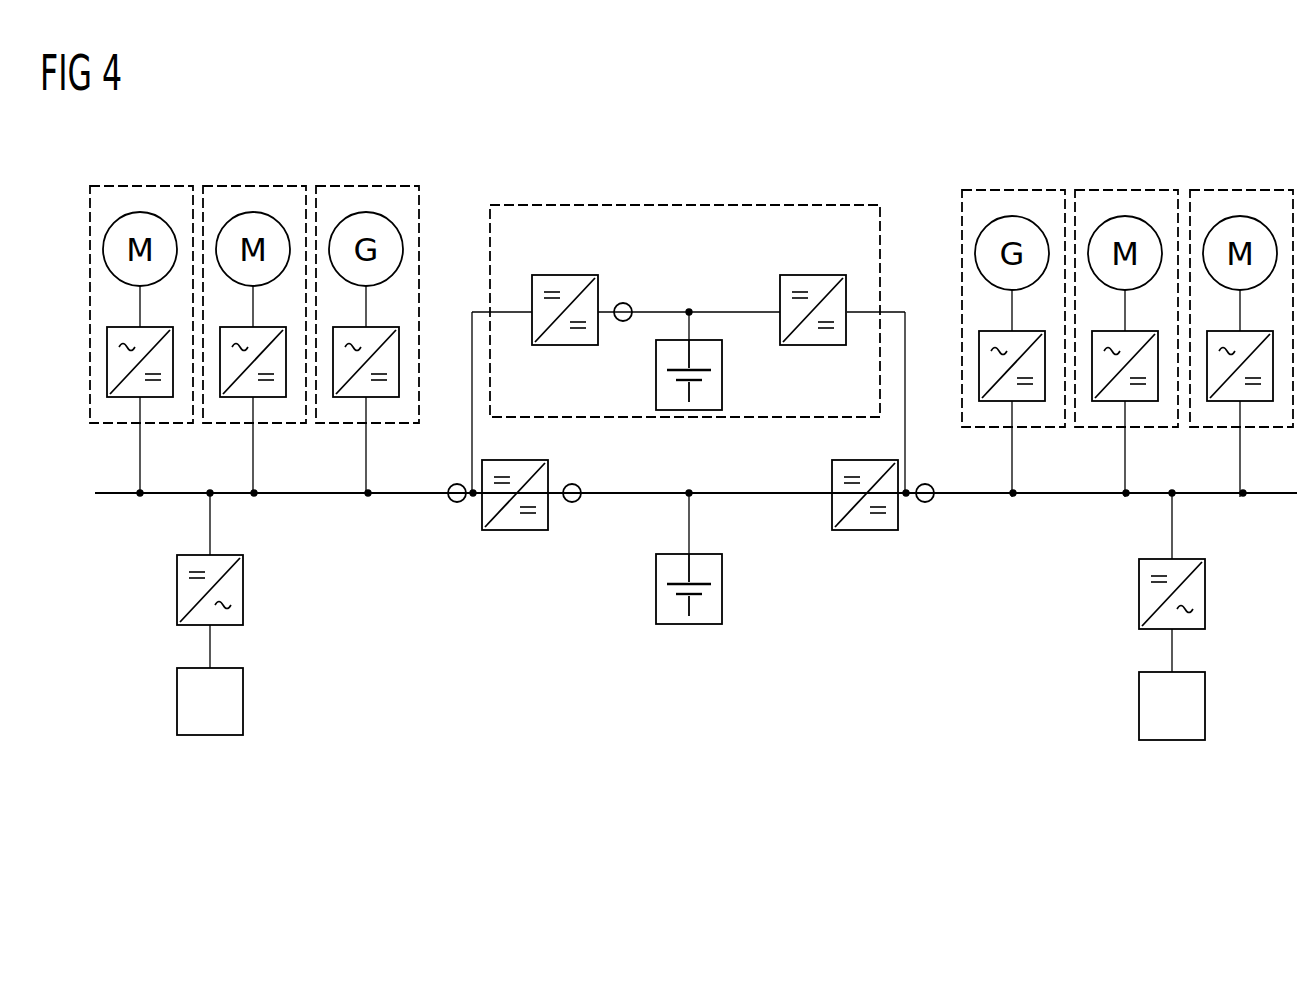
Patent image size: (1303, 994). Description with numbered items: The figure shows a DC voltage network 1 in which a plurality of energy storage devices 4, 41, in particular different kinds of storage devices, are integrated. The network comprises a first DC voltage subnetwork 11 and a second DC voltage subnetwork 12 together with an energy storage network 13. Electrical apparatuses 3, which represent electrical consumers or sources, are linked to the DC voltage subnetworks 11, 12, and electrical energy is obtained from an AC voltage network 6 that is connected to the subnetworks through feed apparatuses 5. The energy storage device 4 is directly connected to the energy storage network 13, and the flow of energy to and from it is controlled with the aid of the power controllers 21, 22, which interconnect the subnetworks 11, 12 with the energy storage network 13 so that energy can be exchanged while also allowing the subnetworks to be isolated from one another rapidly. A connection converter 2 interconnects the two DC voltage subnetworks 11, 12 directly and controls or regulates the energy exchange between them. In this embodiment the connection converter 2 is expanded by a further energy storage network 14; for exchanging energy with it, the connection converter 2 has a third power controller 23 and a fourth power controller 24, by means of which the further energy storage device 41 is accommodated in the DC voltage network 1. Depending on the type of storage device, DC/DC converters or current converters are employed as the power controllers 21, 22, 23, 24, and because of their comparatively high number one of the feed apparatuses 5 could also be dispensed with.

The DC voltage network 1 is at (908, 134).
The connection converter 2 is at (689, 310).
The electrical apparatus 3 is at (135, 186).
The energy storage device 4 is at (691, 625).
The feed apparatus 5 is at (243, 585).
The AC voltage network 6 is at (212, 738).
The first DC voltage subnetwork 11 is at (457, 503).
The second DC voltage subnetwork 12 is at (925, 503).
The energy storage network 13 is at (572, 503).
The further energy storage network 14 is at (623, 322).
The first power controller 21 is at (515, 530).
The second power controller 22 is at (868, 530).
The third power controller 23 is at (565, 275).
The fourth power controller 24 is at (810, 275).
The further energy storage device 41 is at (723, 380).